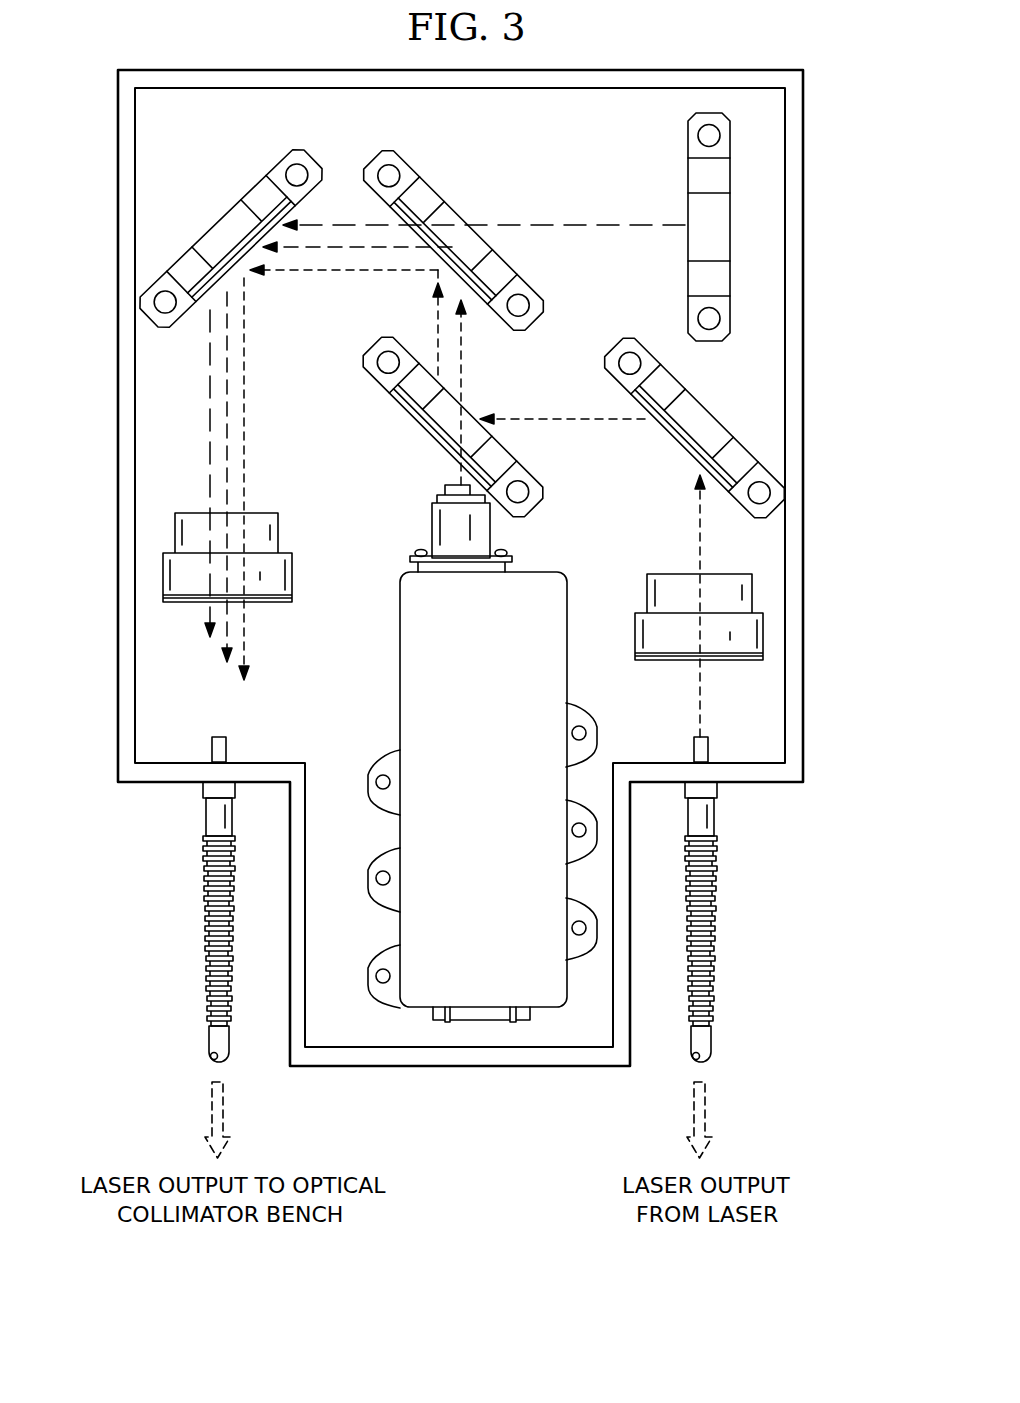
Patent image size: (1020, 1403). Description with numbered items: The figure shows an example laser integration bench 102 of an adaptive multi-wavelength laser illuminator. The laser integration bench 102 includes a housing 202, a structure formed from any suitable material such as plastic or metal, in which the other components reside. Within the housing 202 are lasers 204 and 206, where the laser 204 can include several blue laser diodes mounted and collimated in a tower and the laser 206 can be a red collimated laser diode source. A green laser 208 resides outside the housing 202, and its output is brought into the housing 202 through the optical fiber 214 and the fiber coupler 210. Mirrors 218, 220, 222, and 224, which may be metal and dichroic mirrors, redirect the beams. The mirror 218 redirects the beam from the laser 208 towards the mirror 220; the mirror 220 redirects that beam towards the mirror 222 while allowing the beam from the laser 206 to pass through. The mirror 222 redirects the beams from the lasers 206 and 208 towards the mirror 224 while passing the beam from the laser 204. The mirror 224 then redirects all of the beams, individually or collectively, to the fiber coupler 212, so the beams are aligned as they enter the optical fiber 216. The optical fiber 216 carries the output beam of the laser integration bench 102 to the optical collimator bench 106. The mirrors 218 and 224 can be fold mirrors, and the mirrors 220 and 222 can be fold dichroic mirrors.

The laser integration bench 102 is at (459, 1090).
The optical collimator bench 106 is at (208, 1108).
The housing 202 is at (290, 72).
The laser 204 is at (688, 170).
The laser 206 is at (505, 806).
The laser 208 is at (714, 1110).
The fiber coupler 210 is at (645, 572).
The fiber coupler 212 is at (265, 512).
The optical fiber 214 is at (720, 820).
The optical fiber 216 is at (206, 820).
The mirror 218 is at (712, 415).
The mirror 220 is at (412, 420).
The mirror 222 is at (432, 200).
The mirror 224 is at (222, 228).